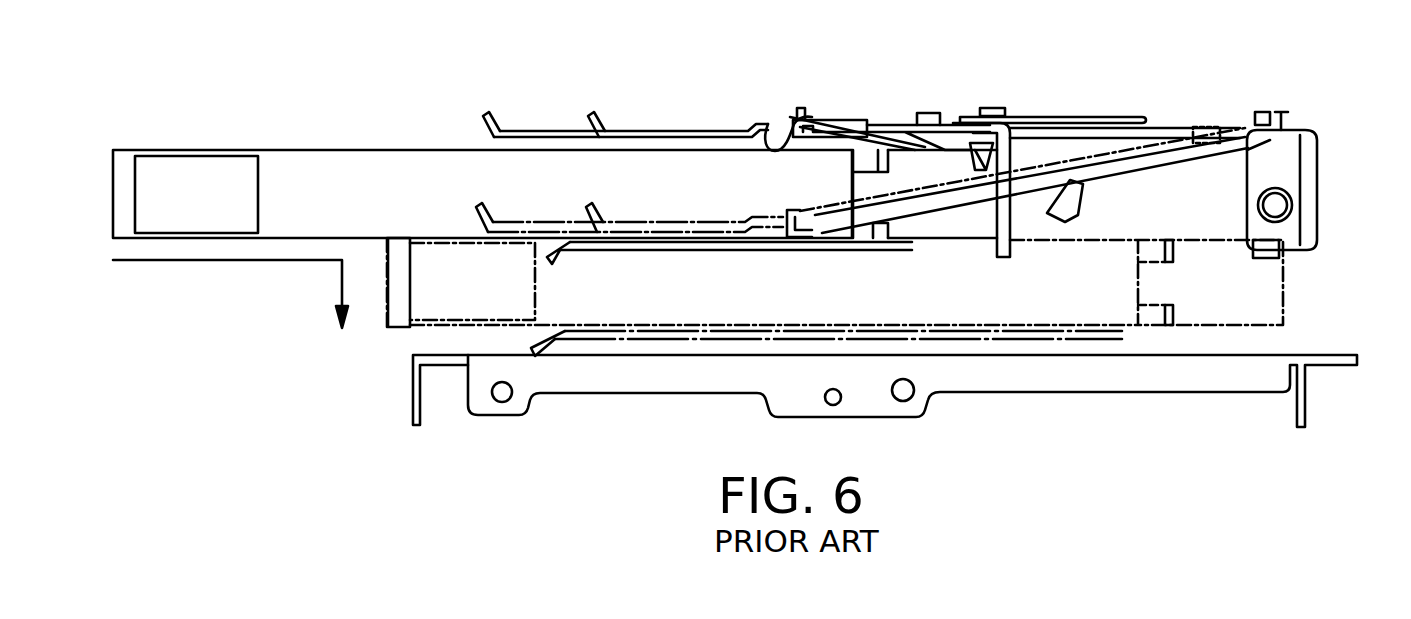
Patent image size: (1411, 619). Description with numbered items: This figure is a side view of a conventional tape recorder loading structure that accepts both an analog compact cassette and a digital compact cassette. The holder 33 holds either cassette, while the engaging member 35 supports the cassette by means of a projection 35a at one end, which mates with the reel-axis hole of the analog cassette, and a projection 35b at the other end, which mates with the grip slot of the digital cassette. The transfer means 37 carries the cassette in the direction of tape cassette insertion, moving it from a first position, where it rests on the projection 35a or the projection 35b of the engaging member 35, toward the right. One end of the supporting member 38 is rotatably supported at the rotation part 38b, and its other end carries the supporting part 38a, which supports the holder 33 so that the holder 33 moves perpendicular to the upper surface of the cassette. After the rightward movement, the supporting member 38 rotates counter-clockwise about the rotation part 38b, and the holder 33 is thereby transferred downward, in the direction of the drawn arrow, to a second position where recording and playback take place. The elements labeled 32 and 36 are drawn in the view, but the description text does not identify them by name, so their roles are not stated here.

The slider 32 is at (352, 150).
The holder 33 is at (537, 130).
The engaging member 35 is at (925, 112).
The projection 35a is at (774, 130).
The projection 35b is at (980, 150).
The holder body 36 is at (990, 170).
The transfer means 37 is at (1117, 117).
The supporting member 38 is at (1160, 128).
The supporting part 38a is at (795, 212).
The rotation part 38b is at (1292, 190).